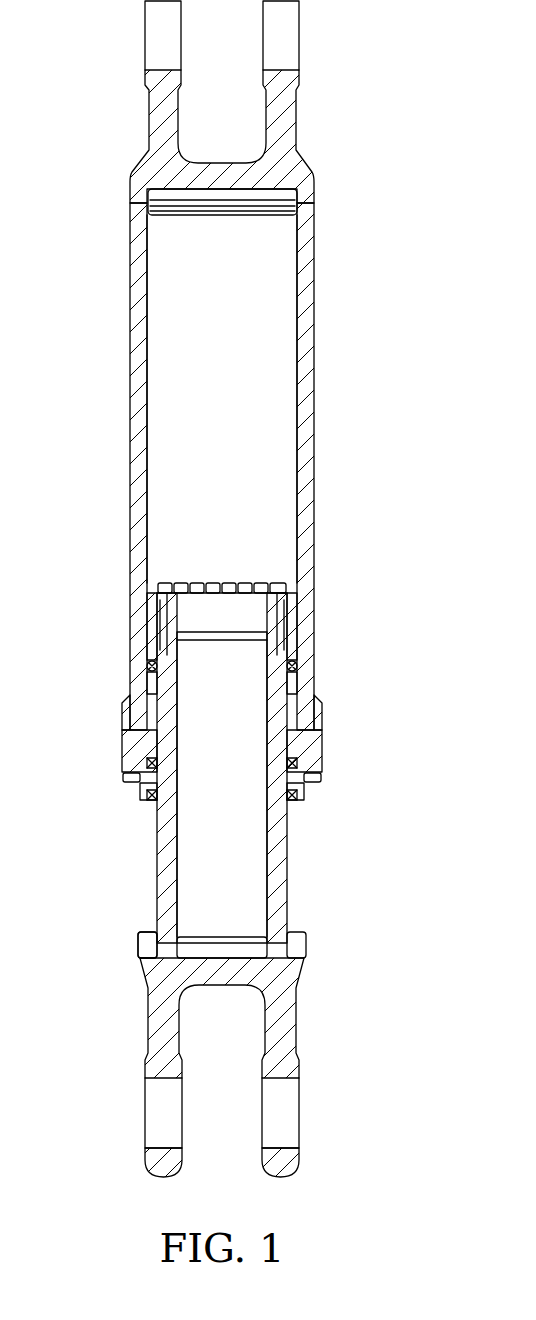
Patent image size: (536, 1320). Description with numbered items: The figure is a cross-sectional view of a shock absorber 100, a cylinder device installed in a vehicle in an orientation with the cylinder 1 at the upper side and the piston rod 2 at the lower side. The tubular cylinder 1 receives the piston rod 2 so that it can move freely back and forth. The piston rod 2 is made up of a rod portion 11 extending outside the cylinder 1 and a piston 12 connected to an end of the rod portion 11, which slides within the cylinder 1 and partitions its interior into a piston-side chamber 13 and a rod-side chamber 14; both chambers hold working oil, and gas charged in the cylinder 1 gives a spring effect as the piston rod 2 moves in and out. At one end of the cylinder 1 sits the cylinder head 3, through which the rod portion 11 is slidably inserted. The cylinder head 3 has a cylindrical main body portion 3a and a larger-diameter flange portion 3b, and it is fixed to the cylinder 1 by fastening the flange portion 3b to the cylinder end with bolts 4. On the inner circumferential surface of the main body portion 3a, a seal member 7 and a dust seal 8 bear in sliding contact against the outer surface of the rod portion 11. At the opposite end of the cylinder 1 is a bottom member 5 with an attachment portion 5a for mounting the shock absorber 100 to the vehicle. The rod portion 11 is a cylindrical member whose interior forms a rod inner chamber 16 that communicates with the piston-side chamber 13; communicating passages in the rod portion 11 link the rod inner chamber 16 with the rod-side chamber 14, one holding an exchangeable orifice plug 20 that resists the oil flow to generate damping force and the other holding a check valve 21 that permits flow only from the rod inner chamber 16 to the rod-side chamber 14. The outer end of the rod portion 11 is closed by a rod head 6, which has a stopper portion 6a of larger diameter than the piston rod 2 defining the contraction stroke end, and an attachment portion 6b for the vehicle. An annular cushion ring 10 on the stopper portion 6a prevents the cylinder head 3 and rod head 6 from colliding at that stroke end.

The shock absorber 100 is at (356, 83).
The cylinder 1 is at (218, 466).
The piston rod 2 is at (262, 768).
The cylinder head 3 is at (262, 733).
The main body portion 3a is at (292, 722).
The flange portion 3b is at (249, 751).
The bolts 4 is at (312, 777).
The bottom member 5 is at (221, 108).
The attachment portion 5a is at (158, 68).
The rod head 6 is at (221, 1035).
The stopper portion 6a is at (143, 952).
The attachment portion 6b is at (278, 1082).
The seal member 7 is at (148, 764).
The dust seal 8 is at (152, 796).
The cushion ring 10 is at (148, 937).
The rod portion 11 is at (283, 863).
The piston 12 is at (288, 608).
The piston-side chamber 13 is at (168, 300).
The rod-side chamber 14 is at (150, 683).
The rod inner chamber 16 is at (240, 897).
The orifice plug 20 is at (294, 672).
The check valve 21 is at (150, 665).